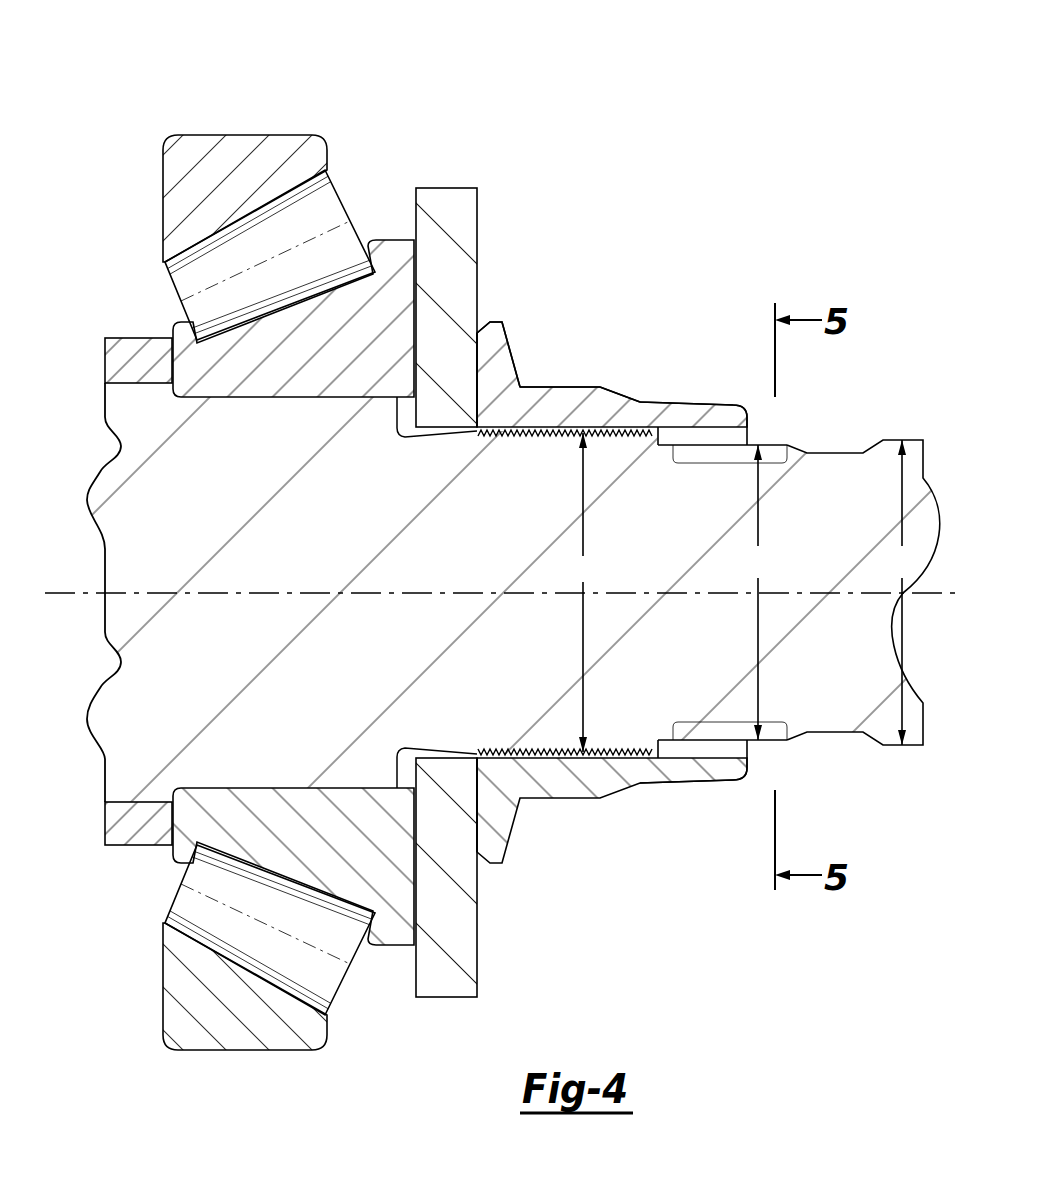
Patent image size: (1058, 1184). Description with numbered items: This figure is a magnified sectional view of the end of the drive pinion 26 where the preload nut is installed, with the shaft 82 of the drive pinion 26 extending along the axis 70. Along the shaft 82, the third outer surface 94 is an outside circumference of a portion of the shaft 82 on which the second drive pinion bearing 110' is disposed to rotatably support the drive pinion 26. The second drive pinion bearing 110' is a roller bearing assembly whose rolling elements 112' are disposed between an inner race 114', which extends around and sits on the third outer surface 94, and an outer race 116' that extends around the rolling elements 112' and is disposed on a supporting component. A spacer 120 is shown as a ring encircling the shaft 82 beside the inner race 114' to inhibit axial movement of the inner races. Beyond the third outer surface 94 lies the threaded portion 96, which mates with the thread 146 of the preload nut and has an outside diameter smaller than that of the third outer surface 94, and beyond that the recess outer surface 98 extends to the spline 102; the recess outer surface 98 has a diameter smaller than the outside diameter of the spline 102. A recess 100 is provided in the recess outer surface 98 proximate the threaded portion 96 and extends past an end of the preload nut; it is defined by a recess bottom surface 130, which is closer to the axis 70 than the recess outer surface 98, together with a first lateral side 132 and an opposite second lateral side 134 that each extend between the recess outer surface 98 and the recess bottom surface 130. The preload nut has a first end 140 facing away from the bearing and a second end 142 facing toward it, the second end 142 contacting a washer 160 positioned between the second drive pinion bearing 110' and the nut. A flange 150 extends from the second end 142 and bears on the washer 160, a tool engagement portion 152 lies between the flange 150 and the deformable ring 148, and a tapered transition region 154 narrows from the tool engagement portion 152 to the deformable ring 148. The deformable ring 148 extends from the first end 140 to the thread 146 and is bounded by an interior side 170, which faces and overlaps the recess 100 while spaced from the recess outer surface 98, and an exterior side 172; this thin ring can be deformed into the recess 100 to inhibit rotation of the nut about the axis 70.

The axis 70 is at (529, 592).
The drive pinion 26 is at (105, 472).
The shaft 82 is at (115, 379).
The spacer 120 is at (128, 845).
The third outer surface 94 is at (340, 800).
The threaded portion 96 is at (583, 755).
The recess outer surface 98 is at (563, 572).
The recess 100 is at (764, 440).
The spline 102 is at (897, 440).
The second drive pinion bearing 110' is at (234, 529).
The rolling elements 112' is at (215, 590).
The inner race 114' is at (234, 318).
The outer race 116' is at (191, 563).
The recess bottom surface 130 is at (773, 457).
The first lateral side 132 is at (690, 728).
The second lateral side 134 is at (690, 453).
The first end 140 is at (752, 418).
The second end 142 is at (478, 390).
The thread 146 is at (560, 438).
The deformable ring 148 is at (718, 405).
The flange 150 is at (493, 322).
The tool engagement portion 152 is at (580, 387).
The transition region 154 is at (620, 402).
The washer 160 is at (480, 940).
The interior side 170 is at (725, 760).
The exterior side 172 is at (727, 780).